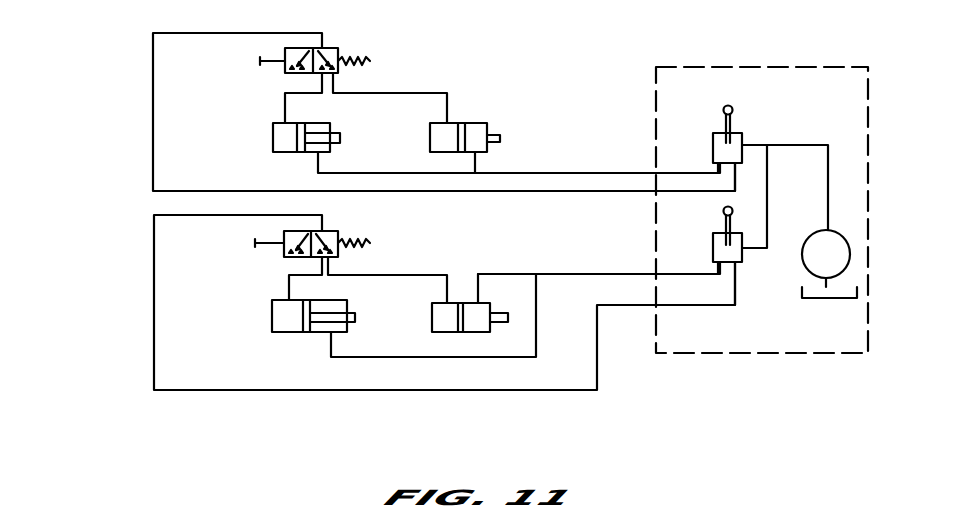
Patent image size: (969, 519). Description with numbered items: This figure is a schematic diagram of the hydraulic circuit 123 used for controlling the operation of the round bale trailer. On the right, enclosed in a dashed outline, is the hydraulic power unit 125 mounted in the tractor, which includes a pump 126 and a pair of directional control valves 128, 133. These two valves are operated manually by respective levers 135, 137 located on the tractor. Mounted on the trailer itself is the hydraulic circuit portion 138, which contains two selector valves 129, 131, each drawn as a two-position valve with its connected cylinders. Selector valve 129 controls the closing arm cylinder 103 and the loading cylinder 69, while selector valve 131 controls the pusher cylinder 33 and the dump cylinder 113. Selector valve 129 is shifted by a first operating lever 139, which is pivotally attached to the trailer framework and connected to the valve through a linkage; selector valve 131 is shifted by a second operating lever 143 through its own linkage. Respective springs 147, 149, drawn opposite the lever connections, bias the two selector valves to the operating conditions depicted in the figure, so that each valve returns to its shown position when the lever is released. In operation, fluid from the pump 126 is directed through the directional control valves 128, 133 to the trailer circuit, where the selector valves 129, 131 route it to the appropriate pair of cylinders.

The hydraulic circuit portion 138 is at (124, 286).
The hydraulic circuit 123 is at (277, 408).
The hydraulic power unit 125 is at (706, 358).
The pump 126 is at (809, 243).
The directional control valve 128 is at (738, 257).
The selector valve 129 is at (305, 56).
The selector valve 131 is at (327, 230).
The directional control valve 133 is at (720, 150).
The lever 135 is at (725, 221).
The lever 137 is at (733, 123).
The first operating lever 139 is at (282, 60).
The second operating lever 143 is at (267, 245).
The spring 147 is at (350, 55).
The spring 149 is at (362, 245).
The loading cylinder 69 is at (279, 136).
The closing arm cylinder 103 is at (470, 128).
The dump cylinder 113 is at (280, 317).
The pusher cylinder 33 is at (444, 316).